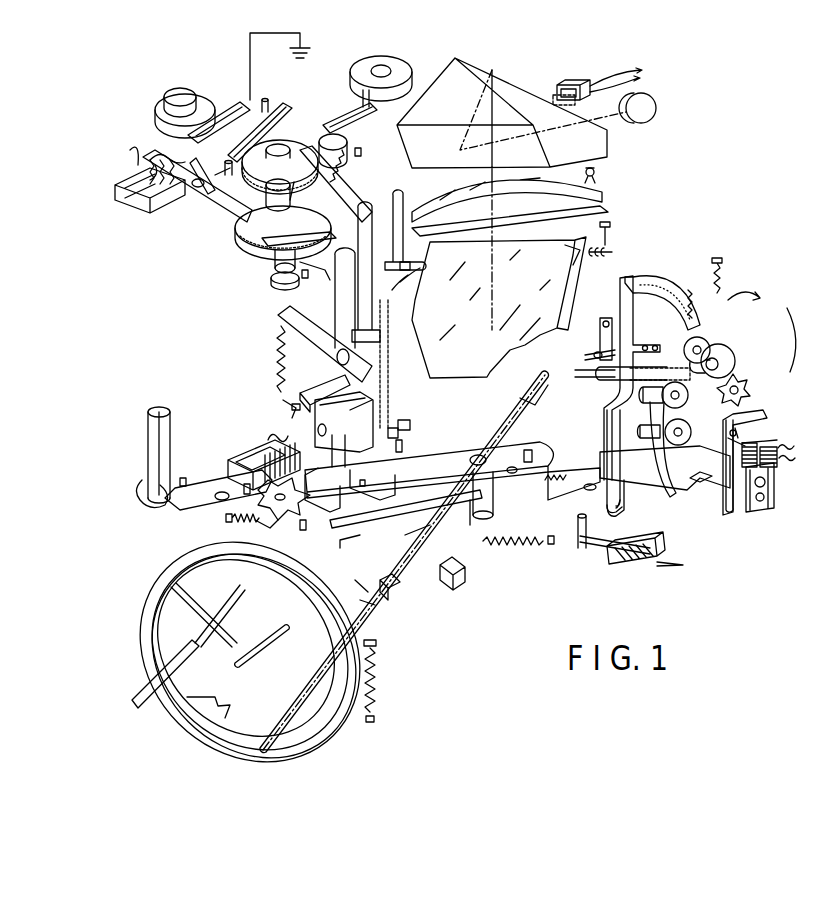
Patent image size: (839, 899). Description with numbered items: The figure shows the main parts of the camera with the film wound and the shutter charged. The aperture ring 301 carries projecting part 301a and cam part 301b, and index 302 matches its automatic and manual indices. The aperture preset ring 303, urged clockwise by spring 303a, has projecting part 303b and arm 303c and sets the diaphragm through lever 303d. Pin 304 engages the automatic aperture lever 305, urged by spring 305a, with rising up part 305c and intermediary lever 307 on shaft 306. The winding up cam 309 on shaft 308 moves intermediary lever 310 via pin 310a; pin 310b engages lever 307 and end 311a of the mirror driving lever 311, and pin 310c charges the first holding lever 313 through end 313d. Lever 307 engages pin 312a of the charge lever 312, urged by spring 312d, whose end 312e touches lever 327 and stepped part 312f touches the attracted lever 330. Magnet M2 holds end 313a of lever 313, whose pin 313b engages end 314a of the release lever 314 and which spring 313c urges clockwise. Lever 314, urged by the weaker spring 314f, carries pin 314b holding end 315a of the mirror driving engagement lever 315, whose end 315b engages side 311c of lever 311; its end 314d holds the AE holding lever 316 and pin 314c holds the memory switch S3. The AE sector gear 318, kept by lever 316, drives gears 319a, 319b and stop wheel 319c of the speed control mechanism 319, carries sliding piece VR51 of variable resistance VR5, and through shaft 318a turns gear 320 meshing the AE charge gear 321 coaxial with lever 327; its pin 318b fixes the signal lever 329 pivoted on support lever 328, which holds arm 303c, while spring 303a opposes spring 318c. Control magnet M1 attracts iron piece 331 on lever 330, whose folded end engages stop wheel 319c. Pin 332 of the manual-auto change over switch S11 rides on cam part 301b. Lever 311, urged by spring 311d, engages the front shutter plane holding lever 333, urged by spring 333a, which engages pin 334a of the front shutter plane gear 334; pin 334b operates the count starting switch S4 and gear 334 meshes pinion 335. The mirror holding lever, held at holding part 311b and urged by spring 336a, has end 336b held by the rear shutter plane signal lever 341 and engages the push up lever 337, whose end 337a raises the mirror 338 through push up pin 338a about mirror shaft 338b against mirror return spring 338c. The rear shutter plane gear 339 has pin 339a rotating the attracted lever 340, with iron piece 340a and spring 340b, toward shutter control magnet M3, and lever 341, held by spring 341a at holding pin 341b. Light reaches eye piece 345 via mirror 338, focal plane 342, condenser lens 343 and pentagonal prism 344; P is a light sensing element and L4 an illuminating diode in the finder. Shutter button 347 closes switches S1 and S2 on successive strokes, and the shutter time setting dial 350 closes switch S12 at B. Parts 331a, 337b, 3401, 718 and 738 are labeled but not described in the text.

The aperture ring 301 is at (338, 742).
The projecting part 301a is at (316, 660).
The cam part 301b is at (212, 712).
The index 302 is at (217, 602).
The aperture preset ring 303 is at (198, 543).
The spring 303a is at (378, 698).
The projecting part 303b is at (250, 612).
The arm 303c is at (518, 395).
The lever 303d is at (146, 708).
The pin 304 is at (398, 622).
The automatic aperture lever 305 is at (463, 580).
The spring 305a is at (505, 548).
The rising up part 305c is at (402, 447).
The shaft 306 is at (490, 495).
The intermediary lever 307 is at (450, 460).
The winding up shaft 308 is at (166, 428).
The winding up cam 309 is at (140, 505).
The intermediary lever 310 is at (200, 500).
The pin 310a is at (184, 476).
The pin 310b is at (352, 478).
The pin 310c is at (262, 530).
The mirror driving lever 311 is at (333, 338).
The one end 311a is at (285, 398).
The holding part 311b is at (334, 292).
The one side 311c is at (372, 404).
The spring 311d is at (279, 343).
The charge lever 312 is at (645, 482).
The pin 312a is at (532, 450).
The spring 312d is at (550, 477).
The other end 312e is at (698, 484).
The stepped part 312f is at (730, 510).
The first holding lever 313 is at (276, 518).
The one end 313a is at (290, 408).
The pin 313b is at (338, 546).
The spring 313c is at (228, 522).
The one end 313d is at (244, 486).
The release lever 314 is at (431, 522).
The one end 314a is at (308, 528).
The pin 314b is at (420, 538).
The pin 314c is at (580, 550).
The end 314d is at (632, 526).
The spring 314f is at (469, 518).
The mirror driving engagement lever 315 is at (323, 495).
The other end 315a is at (362, 590).
The one end 315b is at (411, 420).
The AE holding lever 316 is at (607, 432).
The AE sector gear 318 is at (616, 386).
The shaft 318a is at (630, 502).
The pin 318b is at (580, 383).
The spring 318c is at (722, 283).
The speed control mechanism 319 is at (802, 340).
The gear 319a is at (710, 344).
The gear 319b is at (735, 358).
The stop wheel 319c is at (746, 385).
The gear 320 is at (688, 396).
The AE charge gear 321 is at (686, 442).
The lever 327 is at (674, 500).
The support lever 328 is at (598, 327).
The signal lever 329 is at (594, 356).
The attracted lever 330 is at (752, 416).
The iron piece 331 is at (772, 442).
The pin 331a is at (730, 436).
The pin 332 is at (273, 650).
The front shutter plane holding lever 333 is at (350, 200).
The spring 333a is at (360, 160).
The front shutter plane gear 334 is at (292, 140).
The pin 334a is at (291, 181).
The pin 334b is at (283, 118).
The front shutter plane pinion 335 is at (343, 151).
The spring 336a is at (408, 292).
The end 336b is at (405, 210).
The push up lever 337 is at (372, 392).
The one end 337a is at (308, 390).
The block 337b is at (398, 428).
The mirror 338 is at (570, 300).
The push up pin 338a is at (420, 270).
The mirror shaft 338b is at (613, 252).
The mirror return spring 338c is at (612, 227).
The rear shutter plane gear 339 is at (245, 238).
The pin 339a is at (270, 258).
The attracted lever 340 is at (240, 215).
The iron piece 340a is at (165, 150).
The spring 340b is at (188, 196).
The gear 3401 is at (283, 286).
The rear shutter plane signal lever 341 is at (275, 262).
The spring 341a is at (309, 279).
The holding pin 341b is at (372, 240).
The focal plane 342 is at (605, 219).
The condenser lens 343 is at (603, 201).
The pentaprism 344 is at (604, 147).
The eye piece 345 is at (648, 99).
The shutter button 347 is at (192, 97).
The shutter time setting dial 350 is at (390, 60).
The lead wires 718 is at (795, 462).
The coil 738 is at (262, 448).
The illuminating diode L4 is at (598, 176).
The control magnet M1 is at (776, 497).
The first holding magnet M2 is at (240, 456).
The shutter control magnet M3 is at (150, 210).
The light sensing element P is at (566, 86).
The switch S1 is at (238, 118).
The switch S2 is at (226, 150).
The memory switch S3 is at (666, 553).
The count starting switch S4 is at (268, 100).
The manual-auto change over switch S11 is at (402, 590).
The normally opened switch S12 is at (350, 113).
The variable resistance VR5 is at (648, 272).
The sliding piece VR51 is at (620, 285).